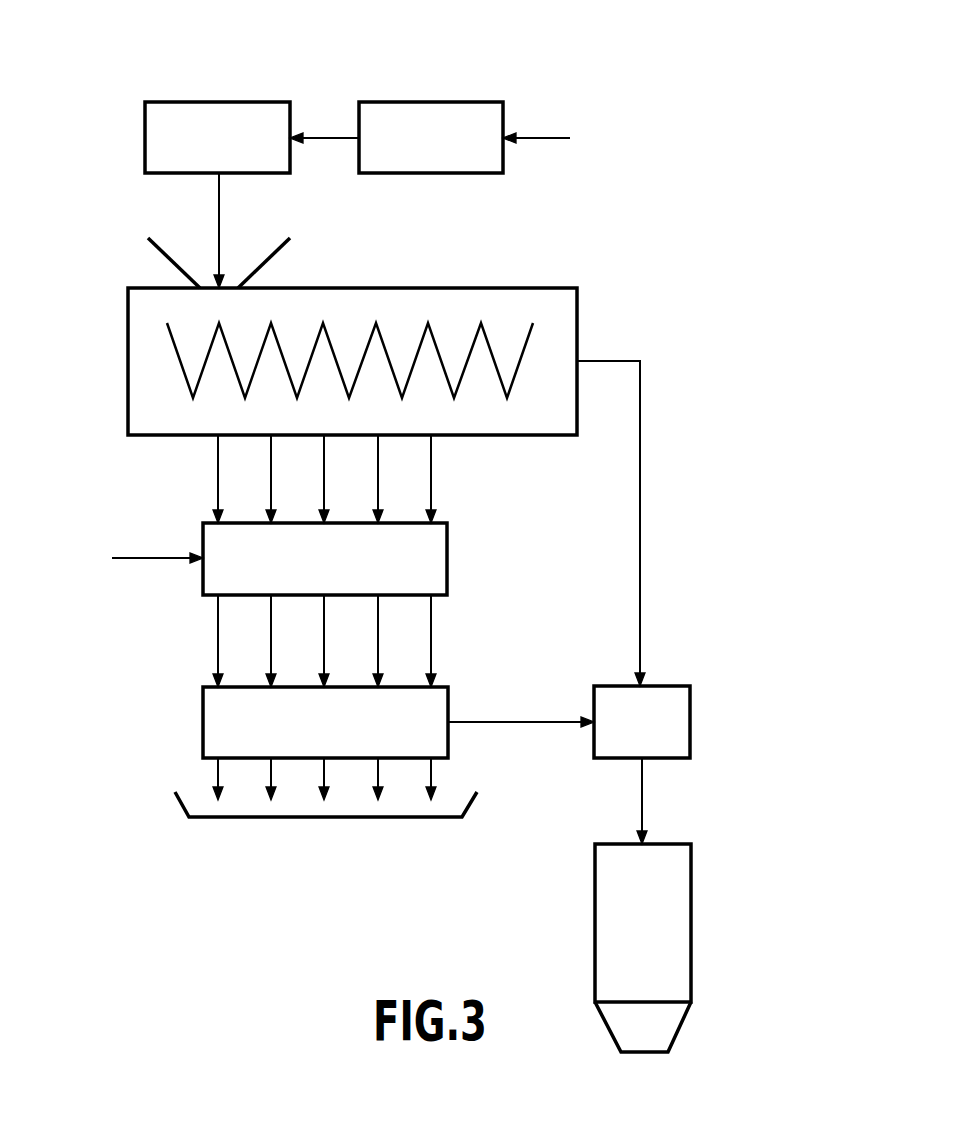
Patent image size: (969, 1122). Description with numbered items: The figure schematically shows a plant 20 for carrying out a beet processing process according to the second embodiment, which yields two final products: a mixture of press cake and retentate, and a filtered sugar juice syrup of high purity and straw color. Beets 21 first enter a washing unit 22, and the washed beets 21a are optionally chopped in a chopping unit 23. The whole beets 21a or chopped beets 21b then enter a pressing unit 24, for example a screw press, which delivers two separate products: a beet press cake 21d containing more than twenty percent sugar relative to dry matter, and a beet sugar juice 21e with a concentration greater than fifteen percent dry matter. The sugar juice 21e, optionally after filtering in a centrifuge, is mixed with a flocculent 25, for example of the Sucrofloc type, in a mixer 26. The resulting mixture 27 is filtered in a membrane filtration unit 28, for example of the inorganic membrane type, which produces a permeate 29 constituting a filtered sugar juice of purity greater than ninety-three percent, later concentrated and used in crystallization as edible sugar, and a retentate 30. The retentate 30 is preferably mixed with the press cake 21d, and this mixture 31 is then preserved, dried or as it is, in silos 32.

The plant 20 is at (133, 62).
The beets 21 is at (532, 136).
The washed beets 21a is at (323, 136).
The chopped beets 21b is at (220, 210).
The beet press cake 21d is at (641, 498).
The beet sugar juice 21e is at (432, 466).
The washing unit 22 is at (444, 152).
The chopping unit 23 is at (231, 152).
The pressing unit 24 is at (487, 287).
The flocculent 25 is at (150, 556).
The mixer 26 is at (338, 573).
The mixture 27 is at (432, 622).
The membrane filtration unit 28 is at (338, 737).
The permeate 29 is at (432, 768).
The retentate 30 is at (509, 721).
The mixture 31 is at (643, 788).
The silos 32 is at (656, 945).